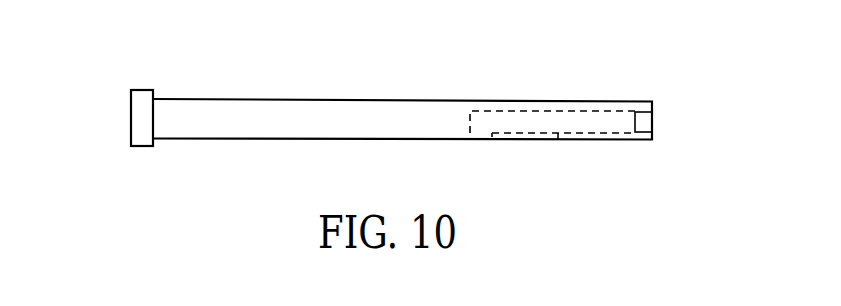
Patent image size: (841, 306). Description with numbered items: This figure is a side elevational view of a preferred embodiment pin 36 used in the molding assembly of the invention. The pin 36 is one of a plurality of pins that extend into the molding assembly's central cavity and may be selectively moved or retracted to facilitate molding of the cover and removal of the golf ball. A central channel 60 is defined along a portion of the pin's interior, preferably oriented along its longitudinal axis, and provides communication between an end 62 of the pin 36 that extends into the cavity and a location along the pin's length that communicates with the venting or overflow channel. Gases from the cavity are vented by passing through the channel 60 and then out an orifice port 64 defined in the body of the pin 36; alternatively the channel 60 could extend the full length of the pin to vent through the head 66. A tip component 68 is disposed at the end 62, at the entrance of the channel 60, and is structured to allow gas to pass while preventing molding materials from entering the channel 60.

The pin 36 is at (296, 70).
The central channel 60 is at (558, 143).
The end 62 is at (653, 135).
The orifice port 64 is at (481, 140).
The head 66 is at (130, 131).
The tip component 68 is at (653, 119).